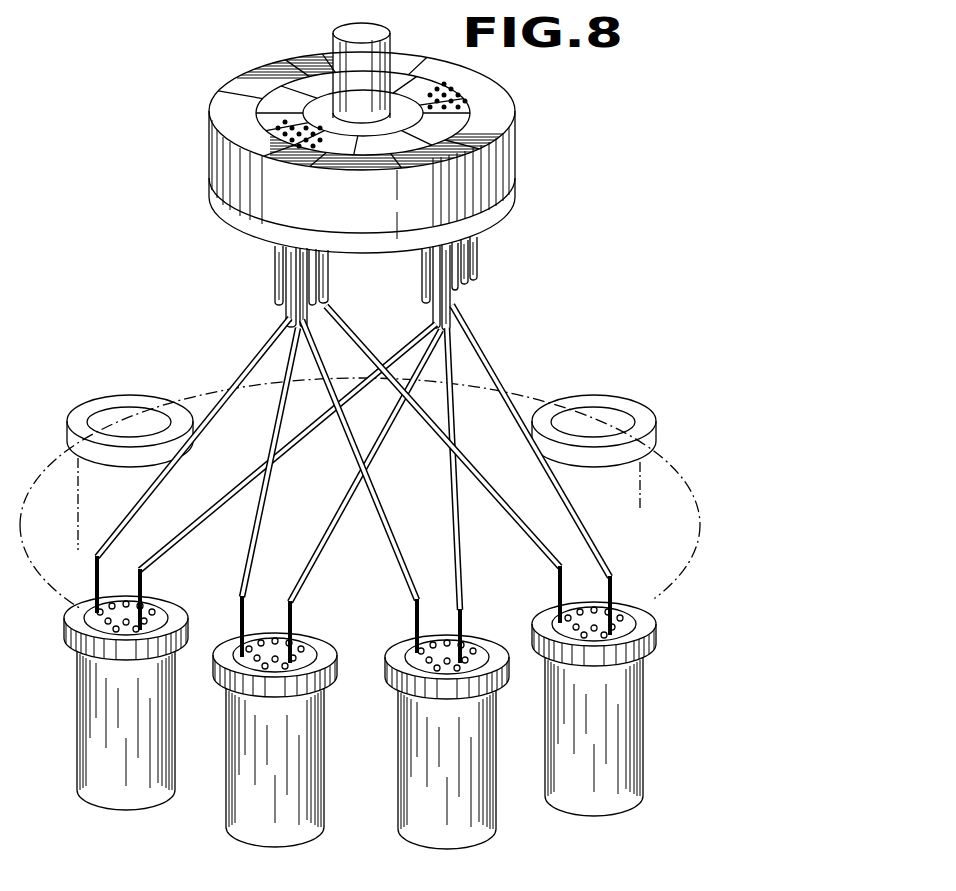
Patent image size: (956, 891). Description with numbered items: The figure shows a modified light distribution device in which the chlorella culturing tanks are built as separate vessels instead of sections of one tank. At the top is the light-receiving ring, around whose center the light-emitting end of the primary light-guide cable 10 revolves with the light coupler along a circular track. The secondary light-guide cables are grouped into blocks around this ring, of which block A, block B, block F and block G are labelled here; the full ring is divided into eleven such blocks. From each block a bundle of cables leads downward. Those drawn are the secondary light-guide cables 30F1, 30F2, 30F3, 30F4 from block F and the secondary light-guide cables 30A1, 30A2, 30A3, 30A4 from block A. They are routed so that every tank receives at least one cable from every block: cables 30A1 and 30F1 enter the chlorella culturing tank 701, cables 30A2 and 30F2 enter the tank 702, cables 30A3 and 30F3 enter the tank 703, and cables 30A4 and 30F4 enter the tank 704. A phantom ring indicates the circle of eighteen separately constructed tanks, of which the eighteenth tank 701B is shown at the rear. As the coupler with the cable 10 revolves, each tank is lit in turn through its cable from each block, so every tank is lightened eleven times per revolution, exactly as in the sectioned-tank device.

The primary light-guide cable 10 is at (338, 30).
The block A is at (436, 100).
The block B is at (457, 125).
The block F is at (288, 147).
The block G is at (270, 118).
The secondary light-guide cable 30F1 is at (557, 555).
The secondary light-guide cable 30F2 is at (392, 525).
The secondary light-guide cable 30F3 is at (262, 512).
The secondary light-guide cable 30F4 is at (212, 408).
The secondary light-guide cable 30A1 is at (507, 380).
The secondary light-guide cable 30A2 is at (463, 594).
The secondary light-guide cable 30A3 is at (316, 562).
The secondary light-guide cable 30A4 is at (184, 537).
The chlorella culturing tank 701 is at (640, 733).
The chlorella culturing tank 702 is at (488, 820).
The chlorella culturing tank 703 is at (313, 825).
The chlorella culturing tank 704 is at (173, 788).
The chlorella culturing tank 701B is at (663, 414).